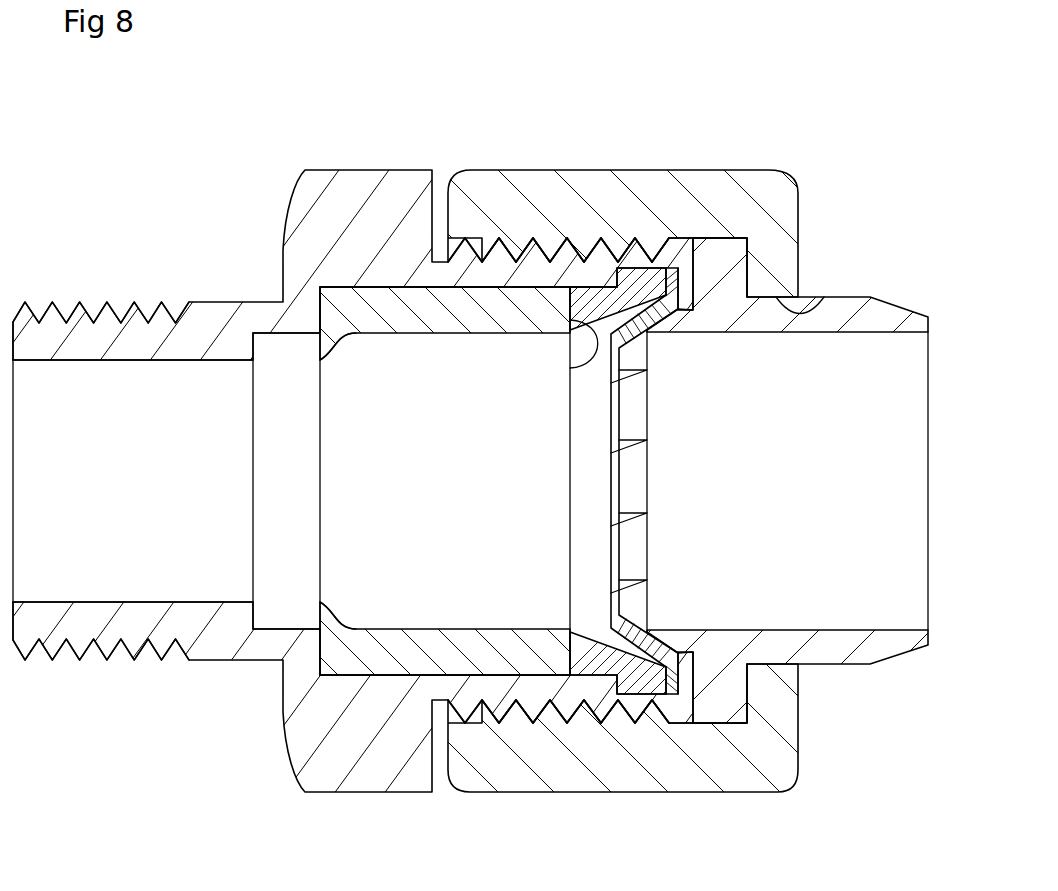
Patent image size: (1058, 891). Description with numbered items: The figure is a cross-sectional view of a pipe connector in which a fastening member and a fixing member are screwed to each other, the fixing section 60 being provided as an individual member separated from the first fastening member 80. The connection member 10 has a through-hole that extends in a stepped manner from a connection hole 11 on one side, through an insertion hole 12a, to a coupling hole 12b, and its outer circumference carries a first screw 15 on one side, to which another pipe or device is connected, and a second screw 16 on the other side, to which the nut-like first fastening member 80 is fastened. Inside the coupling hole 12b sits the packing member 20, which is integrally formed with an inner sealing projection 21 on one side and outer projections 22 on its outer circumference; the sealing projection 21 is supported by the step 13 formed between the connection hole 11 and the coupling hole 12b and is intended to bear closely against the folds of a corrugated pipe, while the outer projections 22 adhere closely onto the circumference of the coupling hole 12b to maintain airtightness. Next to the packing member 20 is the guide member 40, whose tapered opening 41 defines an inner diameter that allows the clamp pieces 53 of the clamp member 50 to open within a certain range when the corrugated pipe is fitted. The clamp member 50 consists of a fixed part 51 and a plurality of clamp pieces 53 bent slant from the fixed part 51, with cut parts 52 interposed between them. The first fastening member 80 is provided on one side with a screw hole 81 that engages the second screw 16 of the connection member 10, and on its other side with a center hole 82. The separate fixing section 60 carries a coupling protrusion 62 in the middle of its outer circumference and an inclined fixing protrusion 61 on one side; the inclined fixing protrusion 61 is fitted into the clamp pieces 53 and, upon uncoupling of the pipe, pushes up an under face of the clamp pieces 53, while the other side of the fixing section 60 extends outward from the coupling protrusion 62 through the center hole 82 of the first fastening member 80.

The connection member 10 is at (365, 170).
The connection hole 11 is at (66, 598).
The insertion hole 12a is at (293, 337).
The coupling hole 12b is at (323, 657).
The step 13 is at (272, 330).
The first screw 15 is at (84, 300).
The second screw 16 is at (515, 244).
The packing member 20 is at (529, 445).
The sealing projection 21 is at (327, 357).
The outer projections 22 is at (484, 678).
The guide member 40 is at (529, 445).
The tapered opening 41 is at (597, 363).
The clamp member 50 is at (645, 481).
The fixed part 51 is at (678, 690).
The cut parts 52 is at (628, 448).
The clamp pieces 53 is at (628, 406).
The fixing section 60 is at (529, 445).
The inclined fixing protrusion 61 is at (662, 628).
The coupling protrusion 62 is at (717, 253).
The first fastening member 80 is at (529, 445).
The screw hole 81 is at (578, 260).
The center hole 82 is at (825, 297).